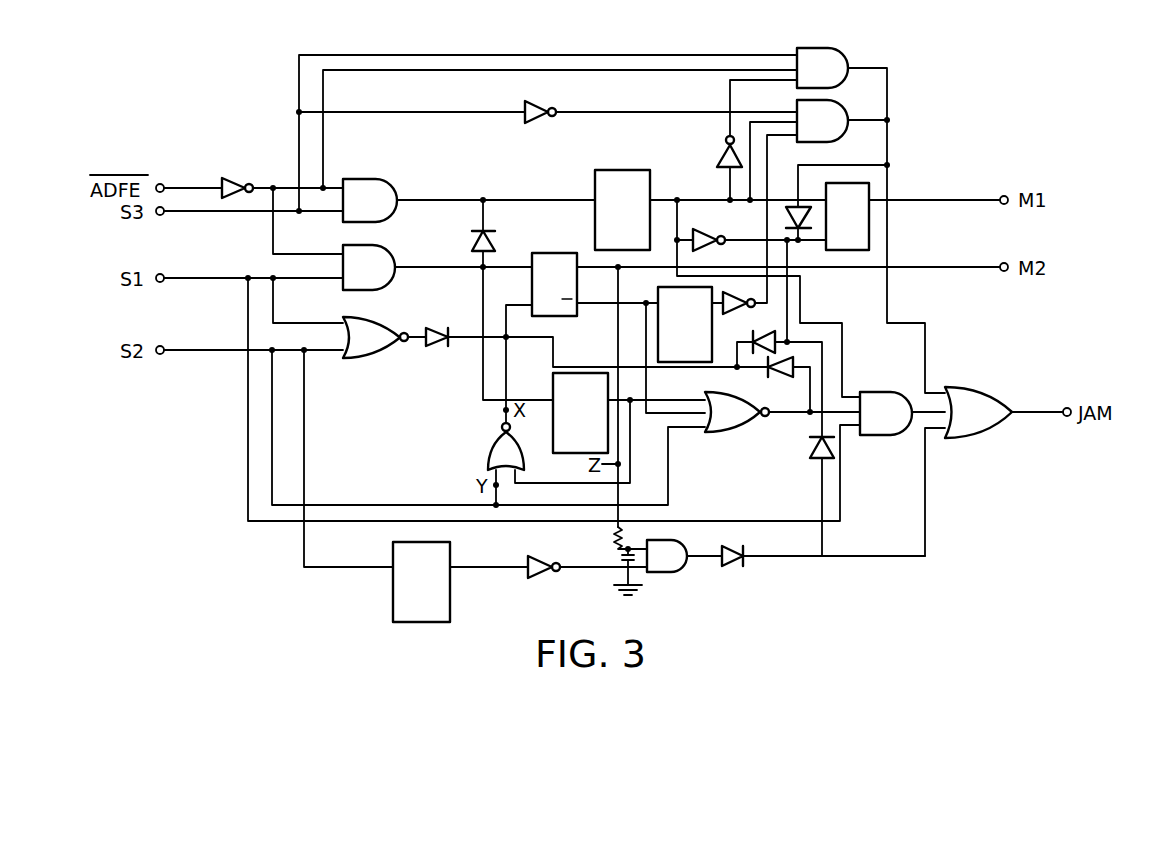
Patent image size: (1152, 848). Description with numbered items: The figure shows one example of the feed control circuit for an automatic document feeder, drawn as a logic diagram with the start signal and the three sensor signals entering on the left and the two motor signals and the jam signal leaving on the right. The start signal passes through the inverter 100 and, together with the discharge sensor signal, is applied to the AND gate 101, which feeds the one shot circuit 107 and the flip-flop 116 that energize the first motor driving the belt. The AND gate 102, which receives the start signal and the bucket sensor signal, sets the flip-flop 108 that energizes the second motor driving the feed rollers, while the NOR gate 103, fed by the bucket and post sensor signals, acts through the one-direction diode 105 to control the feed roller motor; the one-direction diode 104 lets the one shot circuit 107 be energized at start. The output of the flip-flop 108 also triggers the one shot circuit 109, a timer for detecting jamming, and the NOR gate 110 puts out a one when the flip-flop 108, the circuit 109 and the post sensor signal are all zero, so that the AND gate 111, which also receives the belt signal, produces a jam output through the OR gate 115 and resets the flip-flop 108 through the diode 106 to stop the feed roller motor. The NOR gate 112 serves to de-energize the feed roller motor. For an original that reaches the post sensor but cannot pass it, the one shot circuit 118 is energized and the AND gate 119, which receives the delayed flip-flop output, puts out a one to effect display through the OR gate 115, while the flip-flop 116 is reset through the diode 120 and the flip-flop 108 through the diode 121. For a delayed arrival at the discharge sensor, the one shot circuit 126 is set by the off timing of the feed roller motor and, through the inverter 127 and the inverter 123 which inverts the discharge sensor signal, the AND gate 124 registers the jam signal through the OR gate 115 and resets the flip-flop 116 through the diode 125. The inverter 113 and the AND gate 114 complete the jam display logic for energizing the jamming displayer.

The inverter 100 is at (223, 178).
The AND gate 101 is at (377, 179).
The AND gate 102 is at (350, 245).
The NOR gate 103 is at (370, 320).
The one-direction diode 104 is at (476, 244).
The one-direction diode 105 is at (440, 348).
The diode 106 is at (782, 378).
The one shot circuit 107 is at (602, 170).
The flip-flop 108 is at (548, 243).
The one shot circuit 109 is at (552, 440).
The NOR gate 110 is at (729, 433).
The AND gate 111 is at (889, 392).
The NOR gate 112 is at (490, 450).
The inverter 113 is at (720, 160).
The AND gate 114 is at (805, 48).
The OR gate 115 is at (975, 388).
The flip-flop 116 is at (870, 222).
The one shot circuit 118 is at (392, 598).
The AND gate 119 is at (660, 576).
The diode 120 is at (812, 448).
The diode 121 is at (772, 333).
The inverter 123 is at (526, 99).
The AND gate 124 is at (830, 142).
The diode 125 is at (790, 218).
The one shot circuit 126 is at (662, 287).
The inverter 127 is at (746, 315).